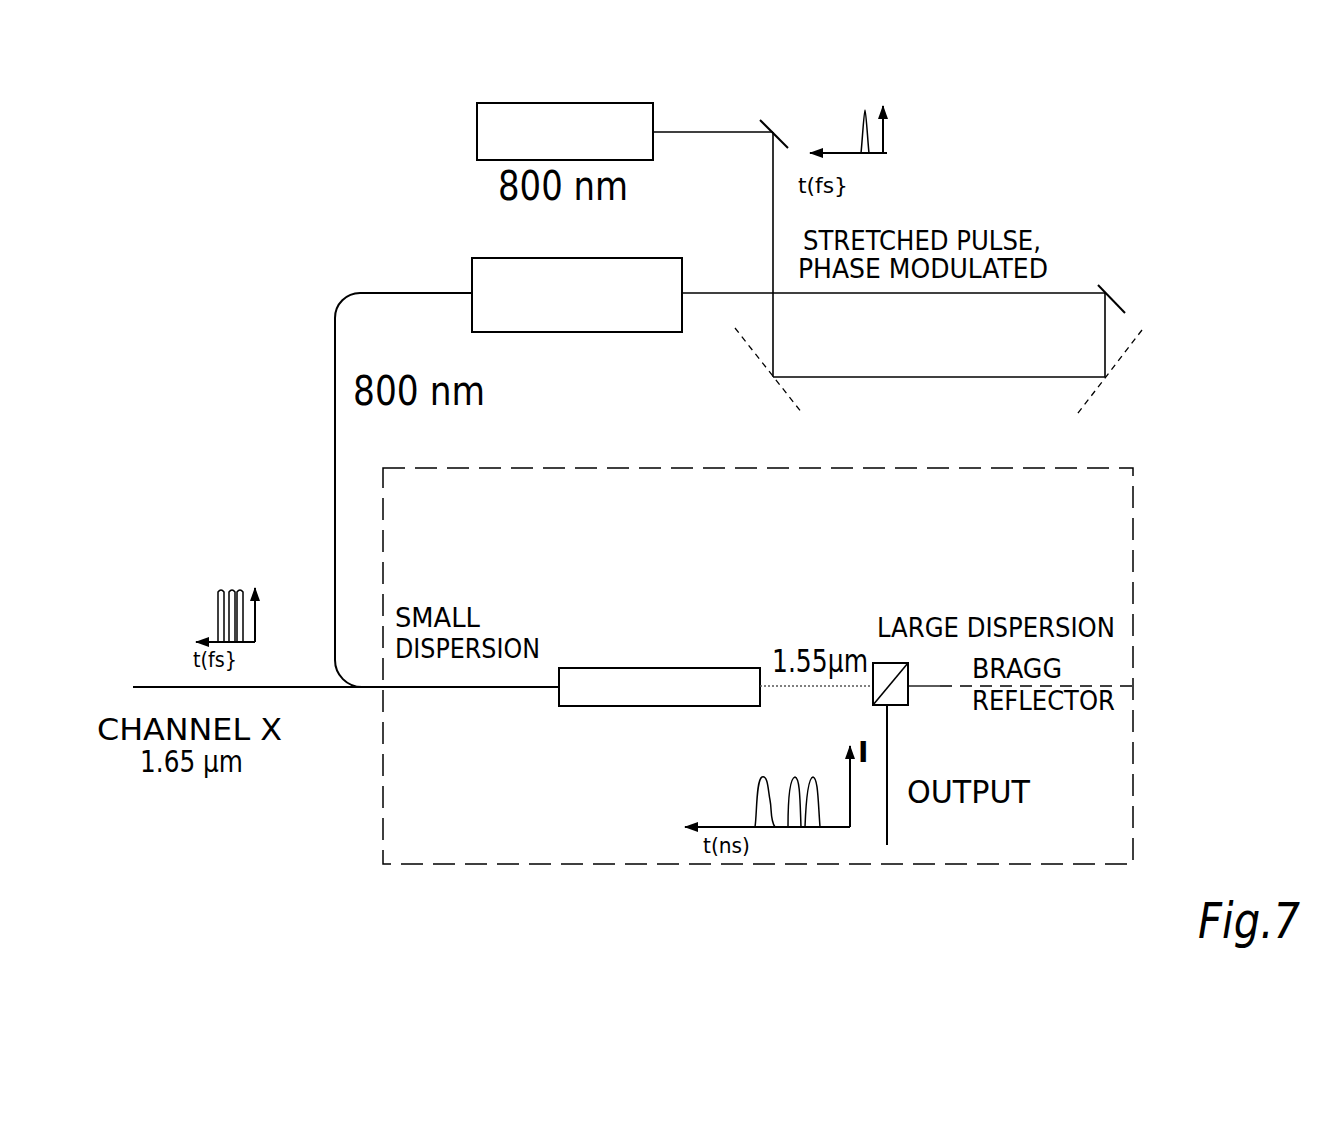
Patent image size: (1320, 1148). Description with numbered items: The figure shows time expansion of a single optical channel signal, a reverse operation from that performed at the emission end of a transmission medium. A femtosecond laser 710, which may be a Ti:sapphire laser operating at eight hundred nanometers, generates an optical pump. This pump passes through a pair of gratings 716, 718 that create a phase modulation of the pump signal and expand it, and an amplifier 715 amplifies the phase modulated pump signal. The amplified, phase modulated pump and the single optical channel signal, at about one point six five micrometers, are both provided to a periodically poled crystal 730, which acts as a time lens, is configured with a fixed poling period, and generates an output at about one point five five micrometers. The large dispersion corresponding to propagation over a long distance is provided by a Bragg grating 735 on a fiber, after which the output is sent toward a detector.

The femtosecond laser 710 is at (570, 103).
The amplifier 715 is at (662, 258).
The grating 716 is at (758, 355).
The grating 718 is at (1118, 362).
The periodically poled crystal 730 is at (661, 668).
The Bragg grating 735 is at (897, 707).